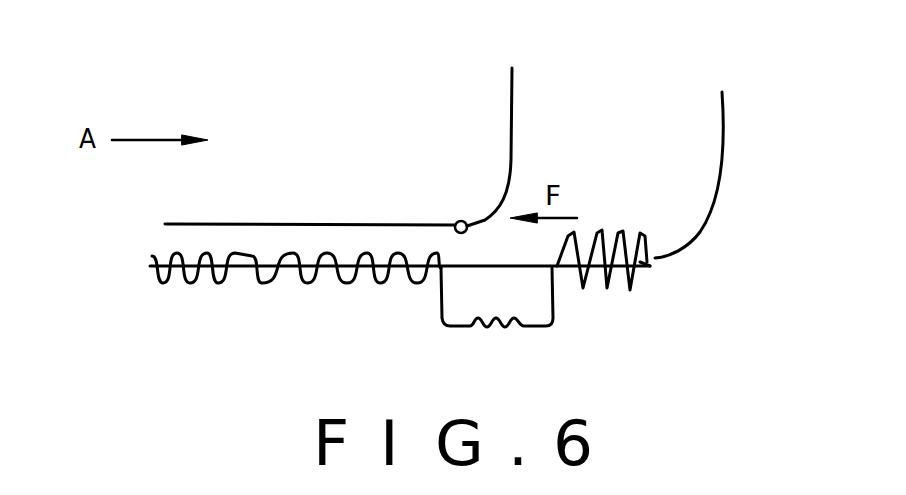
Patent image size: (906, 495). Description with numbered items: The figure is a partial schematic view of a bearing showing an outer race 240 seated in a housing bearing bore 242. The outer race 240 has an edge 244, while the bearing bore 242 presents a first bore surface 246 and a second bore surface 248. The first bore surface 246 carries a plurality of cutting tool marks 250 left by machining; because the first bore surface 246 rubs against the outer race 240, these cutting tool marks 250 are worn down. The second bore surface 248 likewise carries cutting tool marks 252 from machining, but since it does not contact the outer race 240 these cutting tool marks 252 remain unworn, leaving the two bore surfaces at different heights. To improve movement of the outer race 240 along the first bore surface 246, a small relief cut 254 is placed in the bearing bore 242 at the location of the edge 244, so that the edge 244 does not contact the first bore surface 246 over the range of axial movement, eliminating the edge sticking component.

The outer race 240 is at (513, 98).
The housing bearing bore 242 is at (655, 102).
The edge 244 is at (460, 220).
The first bore surface 246 is at (178, 258).
The second bore surface 248 is at (647, 252).
The cutting tool marks 250 is at (278, 272).
The cutting tool marks 252 is at (642, 263).
The relief cut 254 is at (523, 303).